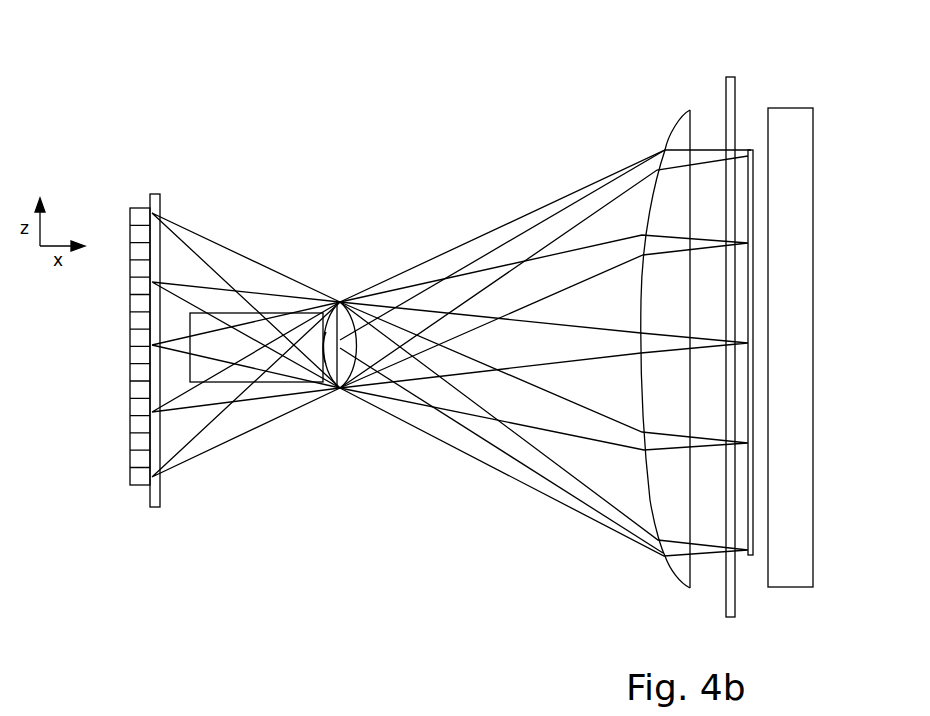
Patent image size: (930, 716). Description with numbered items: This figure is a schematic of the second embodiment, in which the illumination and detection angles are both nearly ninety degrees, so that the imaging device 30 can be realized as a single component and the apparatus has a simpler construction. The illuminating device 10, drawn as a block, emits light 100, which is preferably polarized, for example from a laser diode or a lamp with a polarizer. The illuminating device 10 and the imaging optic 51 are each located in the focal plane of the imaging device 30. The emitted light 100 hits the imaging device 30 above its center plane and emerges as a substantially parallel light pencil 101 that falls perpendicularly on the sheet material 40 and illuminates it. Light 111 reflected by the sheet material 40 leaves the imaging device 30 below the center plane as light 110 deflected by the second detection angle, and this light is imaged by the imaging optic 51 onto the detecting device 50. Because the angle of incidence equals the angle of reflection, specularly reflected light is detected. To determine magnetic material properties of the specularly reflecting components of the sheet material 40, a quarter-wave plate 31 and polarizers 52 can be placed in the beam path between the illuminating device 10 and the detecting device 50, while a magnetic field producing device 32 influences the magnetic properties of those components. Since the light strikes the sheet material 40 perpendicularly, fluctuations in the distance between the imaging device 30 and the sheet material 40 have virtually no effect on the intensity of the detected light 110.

The illuminating device 10 is at (243, 358).
The imaging device 30 is at (680, 563).
The quarter-wave plate 31 is at (733, 615).
The magnetic field producing device 32 is at (798, 137).
The sheet material 40 is at (750, 138).
The detecting device 50 is at (138, 455).
The imaging optic 51 is at (330, 363).
The polarizer 52 is at (155, 206).
The emitted light 100 is at (465, 268).
The parallel light pencil 101 is at (710, 142).
The deflected light 110 is at (443, 445).
The reflected light 111 is at (671, 161).